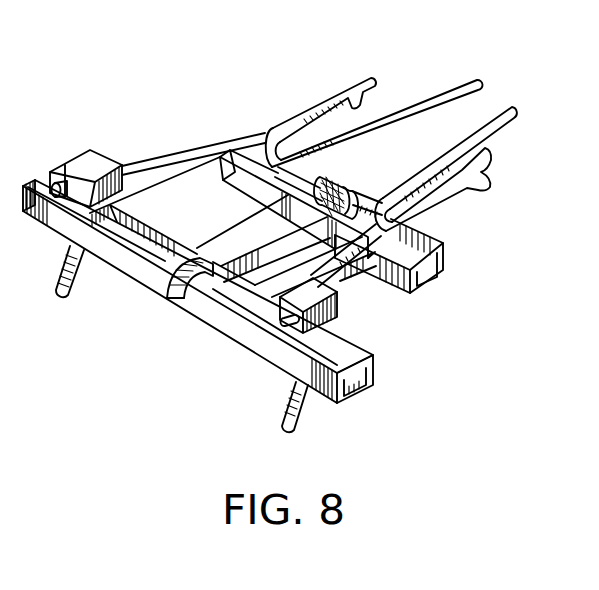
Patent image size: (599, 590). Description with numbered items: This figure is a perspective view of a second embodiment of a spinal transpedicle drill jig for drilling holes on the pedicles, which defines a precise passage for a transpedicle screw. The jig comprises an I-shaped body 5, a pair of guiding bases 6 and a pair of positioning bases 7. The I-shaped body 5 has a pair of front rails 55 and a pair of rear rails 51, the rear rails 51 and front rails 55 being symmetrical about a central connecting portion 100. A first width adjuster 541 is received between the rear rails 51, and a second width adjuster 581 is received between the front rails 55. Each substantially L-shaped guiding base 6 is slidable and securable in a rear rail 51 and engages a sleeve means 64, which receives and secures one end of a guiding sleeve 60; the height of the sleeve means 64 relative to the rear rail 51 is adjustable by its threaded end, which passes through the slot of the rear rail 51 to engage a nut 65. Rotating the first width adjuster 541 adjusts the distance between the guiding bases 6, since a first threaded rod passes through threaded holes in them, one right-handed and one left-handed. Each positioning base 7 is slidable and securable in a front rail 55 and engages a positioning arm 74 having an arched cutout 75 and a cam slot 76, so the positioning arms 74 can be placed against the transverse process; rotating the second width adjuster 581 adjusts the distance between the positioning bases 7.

The I-shaped body 5 is at (222, 338).
The rear rail 51 is at (263, 350).
The front rail 55 is at (384, 261).
The guiding base 6 is at (113, 205).
The central connecting portion 100 is at (247, 230).
The sleeve means 64 is at (90, 150).
The guiding sleeve 60 is at (199, 148).
The nut 65 is at (67, 296).
The first width adjuster 541 is at (171, 300).
The positioning base 7 is at (301, 170).
The second width adjuster 581 is at (346, 185).
The positioning arm 74 is at (348, 93).
The arched cutout 75 is at (493, 158).
The cam slot 76 is at (463, 183).